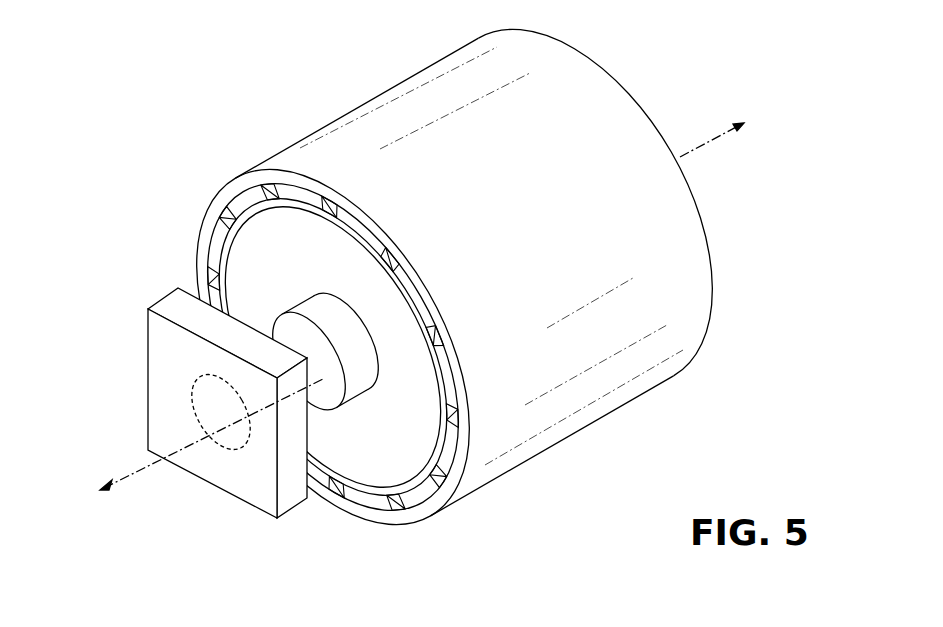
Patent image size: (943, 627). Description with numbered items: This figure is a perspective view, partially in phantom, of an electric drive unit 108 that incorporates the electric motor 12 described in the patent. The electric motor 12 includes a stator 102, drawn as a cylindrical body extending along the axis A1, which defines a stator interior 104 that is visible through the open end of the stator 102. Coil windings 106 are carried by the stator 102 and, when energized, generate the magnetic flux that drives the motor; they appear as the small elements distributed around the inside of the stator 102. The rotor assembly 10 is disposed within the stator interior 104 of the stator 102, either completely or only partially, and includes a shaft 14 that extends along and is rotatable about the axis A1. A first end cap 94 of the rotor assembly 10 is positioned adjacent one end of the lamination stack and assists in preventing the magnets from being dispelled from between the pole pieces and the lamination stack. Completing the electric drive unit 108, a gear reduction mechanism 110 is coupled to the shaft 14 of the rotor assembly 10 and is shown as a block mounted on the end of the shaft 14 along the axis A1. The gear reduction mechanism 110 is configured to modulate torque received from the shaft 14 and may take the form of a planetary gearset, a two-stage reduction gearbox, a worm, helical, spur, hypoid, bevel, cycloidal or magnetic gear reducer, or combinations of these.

The electric drive unit 108 is at (402, 315).
The stator 102 is at (407, 167).
The stator interior 104 is at (285, 197).
The coil windings 106 is at (221, 250).
The rotor assembly 10 is at (248, 275).
The electric motor 12 is at (403, 532).
The shaft 14 is at (318, 378).
The first end cap 94 is at (388, 460).
The gear reduction mechanism 110 is at (168, 370).
The axis A1 is at (132, 470).